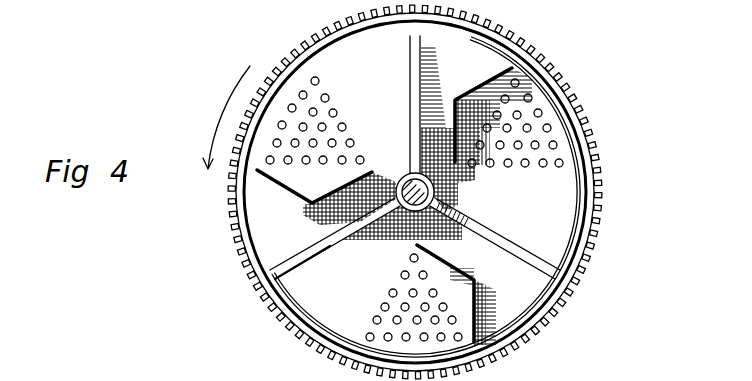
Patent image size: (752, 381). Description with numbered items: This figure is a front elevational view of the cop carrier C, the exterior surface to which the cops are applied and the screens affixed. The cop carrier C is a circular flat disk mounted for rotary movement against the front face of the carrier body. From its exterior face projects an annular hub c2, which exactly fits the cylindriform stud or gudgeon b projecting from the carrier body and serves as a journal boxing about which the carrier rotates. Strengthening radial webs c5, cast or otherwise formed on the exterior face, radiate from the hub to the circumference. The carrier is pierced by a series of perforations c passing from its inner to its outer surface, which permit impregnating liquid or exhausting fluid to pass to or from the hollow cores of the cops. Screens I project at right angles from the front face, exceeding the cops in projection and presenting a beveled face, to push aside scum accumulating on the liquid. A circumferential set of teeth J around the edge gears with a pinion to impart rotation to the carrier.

The cop carrier C is at (611, 132).
The circumferential set of teeth J is at (574, 93).
The cylindriform stud or gudgeon b is at (452, 200).
The strengthening radial webs c5 is at (313, 272).
The annular hub c2 is at (403, 172).
The screens I is at (480, 85).
The perforations c is at (329, 97).